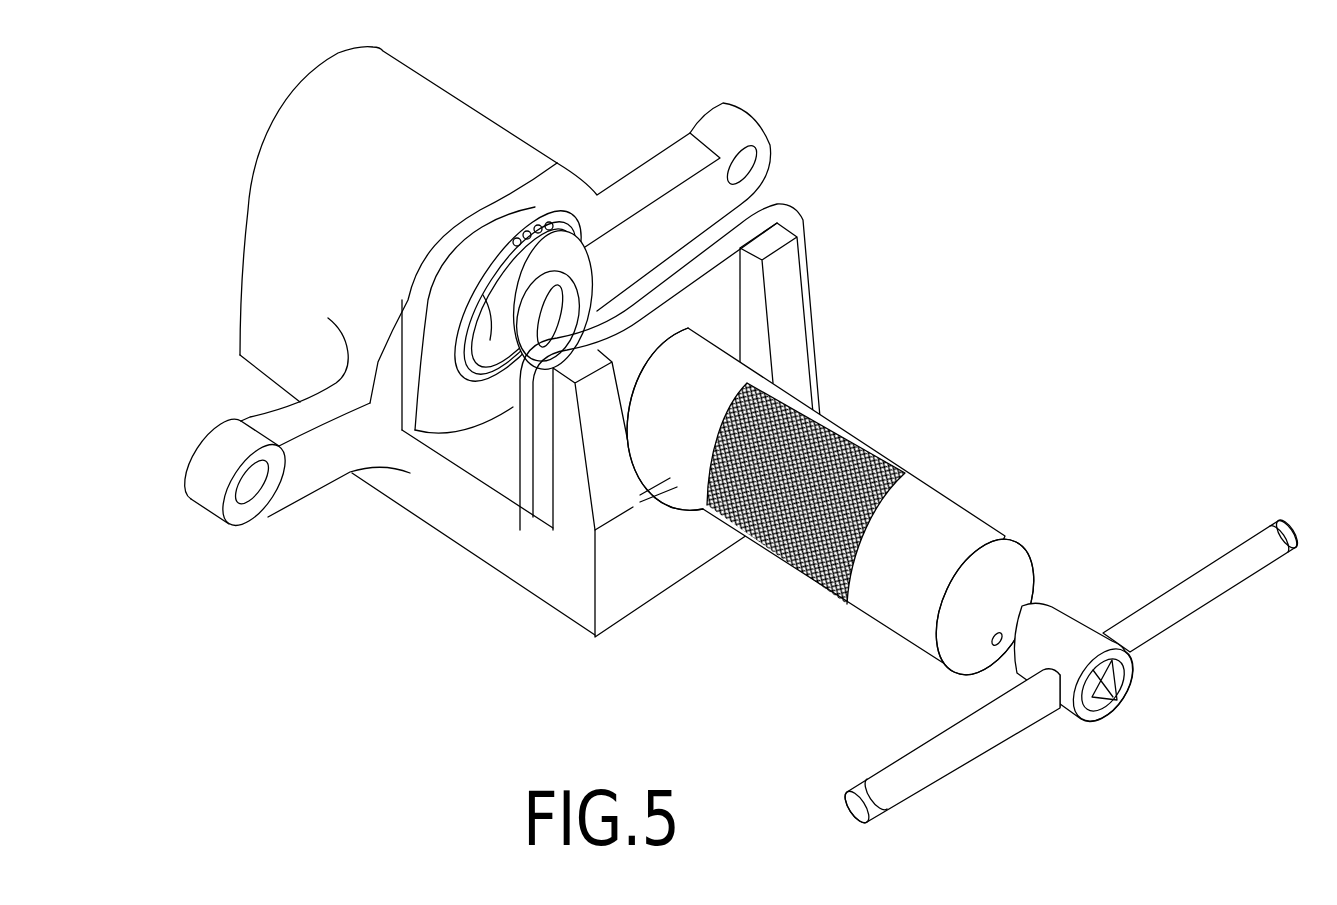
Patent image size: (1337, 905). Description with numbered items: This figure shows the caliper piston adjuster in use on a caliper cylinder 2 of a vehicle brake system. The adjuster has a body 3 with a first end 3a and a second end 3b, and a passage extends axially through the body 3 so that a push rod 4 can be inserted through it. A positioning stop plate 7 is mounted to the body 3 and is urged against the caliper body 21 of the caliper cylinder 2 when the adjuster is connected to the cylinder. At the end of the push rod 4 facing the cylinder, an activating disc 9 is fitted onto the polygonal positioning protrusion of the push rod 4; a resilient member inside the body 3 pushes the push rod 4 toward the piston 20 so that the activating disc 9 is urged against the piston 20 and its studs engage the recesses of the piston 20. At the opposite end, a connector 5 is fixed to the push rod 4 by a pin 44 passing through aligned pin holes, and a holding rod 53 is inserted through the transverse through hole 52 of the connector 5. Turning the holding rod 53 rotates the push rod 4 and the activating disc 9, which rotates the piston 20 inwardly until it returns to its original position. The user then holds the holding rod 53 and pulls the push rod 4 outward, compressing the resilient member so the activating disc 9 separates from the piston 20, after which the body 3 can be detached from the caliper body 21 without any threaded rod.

The caliper cylinder 2 is at (317, 130).
The piston 20 is at (502, 260).
The activating disc 9 is at (572, 260).
The push rod 4 is at (600, 320).
The positioning stop plate 7 is at (803, 225).
The caliper body 21 is at (563, 447).
The body 3 is at (883, 627).
The first end 3a is at (705, 340).
The second end 3b is at (1002, 533).
The pin 44 is at (993, 643).
The connector 5 is at (1075, 617).
The through hole 52 is at (1045, 693).
The holding rod 53 is at (1210, 557).